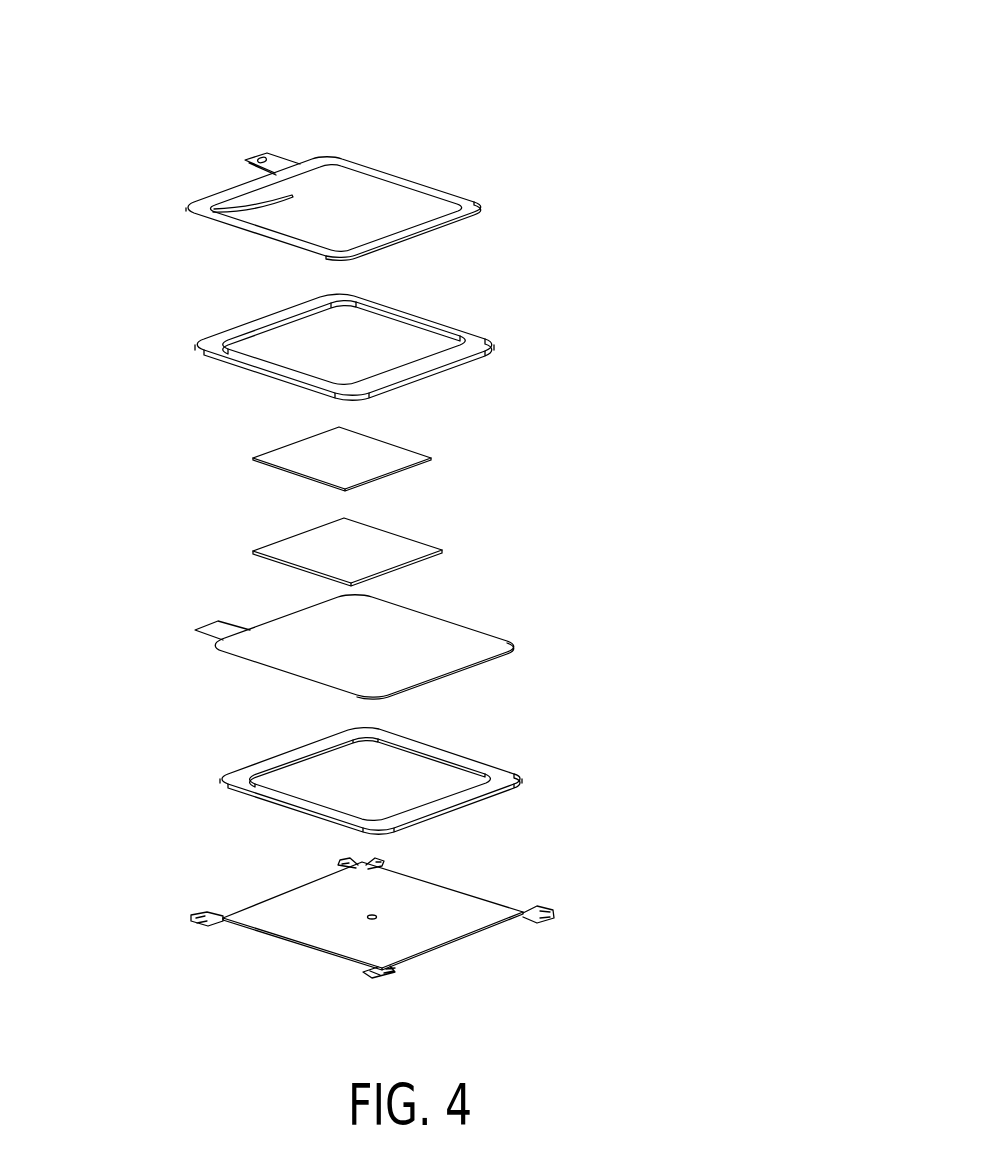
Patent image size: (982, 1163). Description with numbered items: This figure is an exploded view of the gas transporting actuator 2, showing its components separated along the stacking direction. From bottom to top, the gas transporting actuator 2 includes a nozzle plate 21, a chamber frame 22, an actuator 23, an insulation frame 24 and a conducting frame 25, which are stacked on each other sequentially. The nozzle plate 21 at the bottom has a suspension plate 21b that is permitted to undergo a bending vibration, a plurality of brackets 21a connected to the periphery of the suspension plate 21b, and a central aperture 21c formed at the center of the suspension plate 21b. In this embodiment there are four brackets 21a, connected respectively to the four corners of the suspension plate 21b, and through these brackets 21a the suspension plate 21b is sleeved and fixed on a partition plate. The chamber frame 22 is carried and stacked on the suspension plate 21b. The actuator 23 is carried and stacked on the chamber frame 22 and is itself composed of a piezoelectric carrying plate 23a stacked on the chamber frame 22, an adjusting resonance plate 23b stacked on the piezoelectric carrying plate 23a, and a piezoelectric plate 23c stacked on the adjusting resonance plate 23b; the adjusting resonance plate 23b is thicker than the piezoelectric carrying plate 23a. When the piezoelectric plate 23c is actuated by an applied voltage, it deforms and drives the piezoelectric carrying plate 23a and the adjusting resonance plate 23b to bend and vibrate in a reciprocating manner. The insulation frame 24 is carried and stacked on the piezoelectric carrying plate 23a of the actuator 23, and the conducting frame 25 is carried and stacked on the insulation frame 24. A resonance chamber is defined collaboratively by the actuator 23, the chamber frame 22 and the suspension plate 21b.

The gas transporting actuator 2 is at (681, 49).
The nozzle plate 21 is at (381, 898).
The brackets 21a is at (192, 906).
The suspension plate 21b is at (290, 930).
The central aperture 21c is at (375, 899).
The chamber frame 22 is at (543, 779).
The actuator 23 is at (490, 563).
The piezoelectric carrying plate 23a is at (442, 647).
The adjusting resonance plate 23b is at (464, 548).
The piezoelectric plate 23c is at (460, 455).
The insulation frame 24 is at (514, 343).
The conducting frame 25 is at (508, 201).